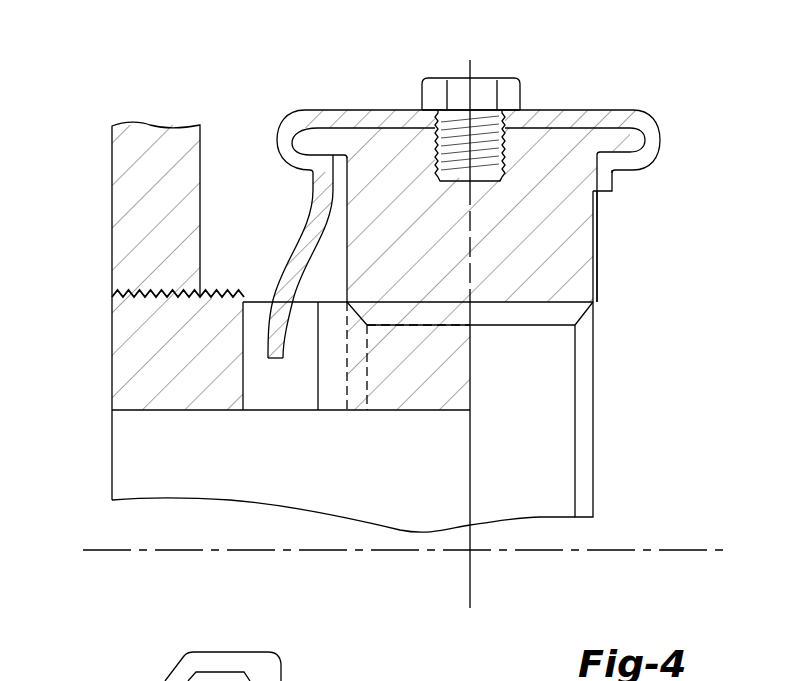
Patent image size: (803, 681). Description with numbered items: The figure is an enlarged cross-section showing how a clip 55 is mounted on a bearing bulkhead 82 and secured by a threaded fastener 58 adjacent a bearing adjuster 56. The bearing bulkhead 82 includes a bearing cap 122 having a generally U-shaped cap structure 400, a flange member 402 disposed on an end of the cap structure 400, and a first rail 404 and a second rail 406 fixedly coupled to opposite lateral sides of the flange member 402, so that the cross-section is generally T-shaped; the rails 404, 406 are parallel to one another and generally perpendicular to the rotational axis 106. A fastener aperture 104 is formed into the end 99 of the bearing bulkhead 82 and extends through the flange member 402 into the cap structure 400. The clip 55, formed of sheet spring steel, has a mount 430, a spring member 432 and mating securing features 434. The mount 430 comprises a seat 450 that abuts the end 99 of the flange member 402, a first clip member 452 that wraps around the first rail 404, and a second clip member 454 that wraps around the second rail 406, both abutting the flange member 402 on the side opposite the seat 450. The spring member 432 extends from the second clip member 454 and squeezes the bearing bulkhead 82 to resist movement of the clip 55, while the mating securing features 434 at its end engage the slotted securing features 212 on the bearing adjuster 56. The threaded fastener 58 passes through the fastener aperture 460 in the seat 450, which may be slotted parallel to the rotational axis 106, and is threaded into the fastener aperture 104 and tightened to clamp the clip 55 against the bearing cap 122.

The clip 55 is at (300, 190).
The bearing adjuster 56 is at (118, 375).
The threaded fastener 58 is at (487, 90).
The bearing bulkhead 82 is at (595, 369).
The end of bearing bulkhead 99 is at (280, 128).
The fastener aperture 104 is at (453, 143).
The rotational axis 106 is at (638, 549).
The bearing cap 122 is at (611, 284).
The securing features 212 is at (303, 397).
The cap structure 400 is at (560, 250).
The flange member 402 is at (567, 138).
The first rail 404 is at (630, 138).
The second rail 406 is at (308, 144).
The mount 430 is at (491, 99).
The spring member 432 is at (281, 330).
The mating securing features 434 is at (275, 360).
The seat 450 is at (330, 127).
The first clip member 452 is at (657, 151).
The second clip member 454 is at (293, 128).
The fastener aperture 460 is at (510, 116).